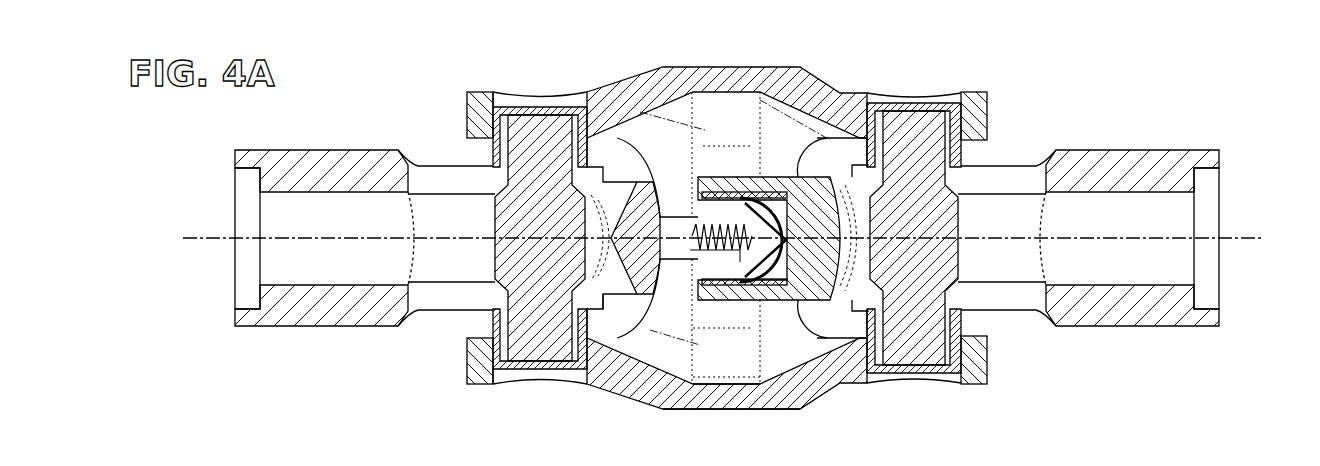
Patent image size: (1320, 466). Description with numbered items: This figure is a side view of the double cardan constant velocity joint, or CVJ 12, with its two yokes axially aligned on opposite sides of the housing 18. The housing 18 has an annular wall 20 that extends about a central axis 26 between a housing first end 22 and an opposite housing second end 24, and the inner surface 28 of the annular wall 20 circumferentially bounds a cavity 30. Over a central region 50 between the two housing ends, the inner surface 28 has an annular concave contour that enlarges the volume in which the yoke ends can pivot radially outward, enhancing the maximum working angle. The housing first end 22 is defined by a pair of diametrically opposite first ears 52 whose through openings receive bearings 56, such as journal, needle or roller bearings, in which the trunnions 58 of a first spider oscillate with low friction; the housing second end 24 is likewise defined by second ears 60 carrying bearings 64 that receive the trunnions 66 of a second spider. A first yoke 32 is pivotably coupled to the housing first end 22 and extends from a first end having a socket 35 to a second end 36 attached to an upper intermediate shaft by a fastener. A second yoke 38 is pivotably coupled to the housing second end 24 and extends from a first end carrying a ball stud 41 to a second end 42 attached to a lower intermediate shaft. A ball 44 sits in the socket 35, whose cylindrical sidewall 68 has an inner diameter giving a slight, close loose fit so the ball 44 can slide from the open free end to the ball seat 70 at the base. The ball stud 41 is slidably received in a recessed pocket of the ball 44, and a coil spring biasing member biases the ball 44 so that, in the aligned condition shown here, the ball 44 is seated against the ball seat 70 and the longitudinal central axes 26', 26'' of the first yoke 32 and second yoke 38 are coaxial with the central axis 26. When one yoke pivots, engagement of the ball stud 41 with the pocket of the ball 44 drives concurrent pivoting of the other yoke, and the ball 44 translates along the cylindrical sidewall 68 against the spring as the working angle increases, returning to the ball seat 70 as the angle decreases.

The constant velocity joint 12 is at (1182, 98).
The housing 18 is at (806, 64).
The annular wall 20 is at (724, 408).
The housing first end 22 is at (990, 97).
The housing second end 24 is at (472, 102).
The central axis 26 is at (727, 182).
The longitudinal central axes of the first and second yokes 26' is at (1280, 205).
The first tube end 26'' is at (173, 205).
The inner surface 28 is at (712, 372).
The cavity 30 is at (682, 338).
The first yoke 32 is at (1026, 314).
The socket 35 is at (684, 206).
The second end of first yoke 36 is at (1222, 290).
The second yoke 38 is at (334, 332).
The ball stud 41 is at (622, 344).
The second end of second yoke 42 is at (238, 295).
The ball 44 is at (766, 215).
The central region 50 is at (797, 48).
The first ears 52 is at (982, 112).
The bearings 56 is at (905, 104).
The trunnions 58 is at (930, 135).
The second ears 60 is at (467, 120).
The bearings 64 is at (515, 106).
The first ferrule 66 is at (542, 125).
The cylindrical sidewall 68 is at (735, 283).
The ball seat 70 is at (788, 285).